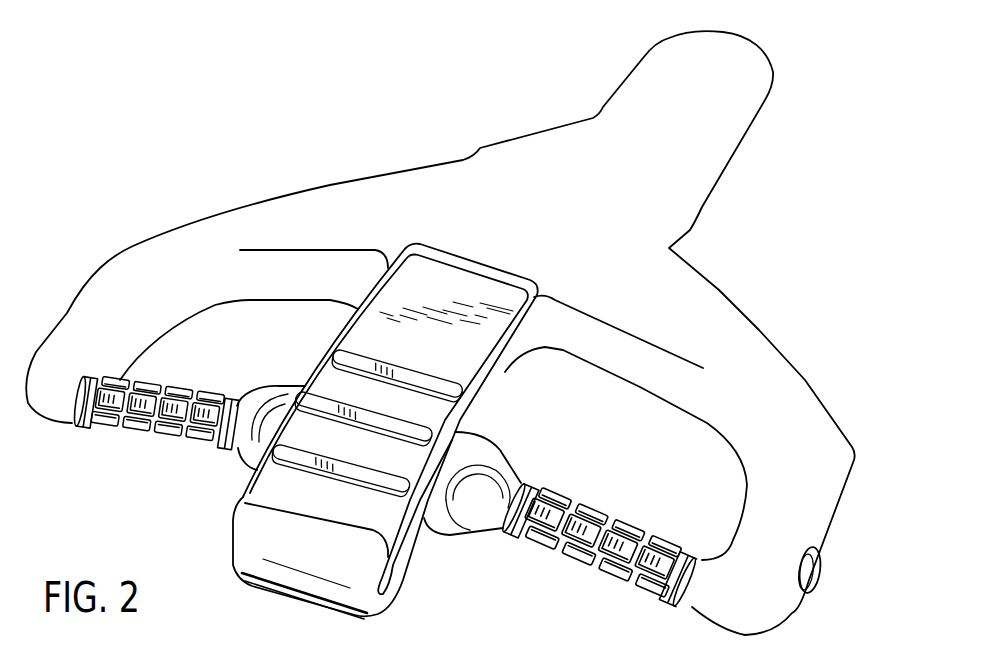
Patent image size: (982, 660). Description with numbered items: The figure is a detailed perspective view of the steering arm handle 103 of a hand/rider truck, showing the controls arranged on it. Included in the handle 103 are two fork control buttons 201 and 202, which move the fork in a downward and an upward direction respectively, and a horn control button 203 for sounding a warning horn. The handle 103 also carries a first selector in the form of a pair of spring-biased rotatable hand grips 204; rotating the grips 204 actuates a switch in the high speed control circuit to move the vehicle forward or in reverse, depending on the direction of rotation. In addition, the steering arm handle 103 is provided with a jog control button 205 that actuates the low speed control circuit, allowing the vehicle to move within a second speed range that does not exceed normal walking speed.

The steering arm handle 103 is at (160, 539).
The fork control button 201 is at (247, 467).
The fork control button 202 is at (310, 372).
The horn control button 203 is at (348, 352).
The rotatable hand grips 204 is at (174, 443).
The jog control button 205 is at (820, 562).